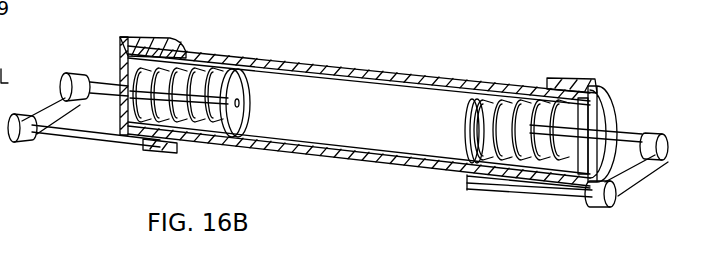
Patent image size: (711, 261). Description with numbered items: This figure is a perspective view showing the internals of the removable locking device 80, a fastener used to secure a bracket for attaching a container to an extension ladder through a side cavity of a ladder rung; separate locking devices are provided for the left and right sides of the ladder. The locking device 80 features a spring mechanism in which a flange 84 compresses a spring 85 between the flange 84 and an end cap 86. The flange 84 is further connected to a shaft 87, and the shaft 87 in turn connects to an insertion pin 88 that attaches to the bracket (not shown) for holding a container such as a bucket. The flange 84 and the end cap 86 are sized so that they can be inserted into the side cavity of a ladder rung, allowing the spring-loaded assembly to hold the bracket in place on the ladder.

The removable locking device 80 is at (72, 175).
The flange 84 is at (467, 140).
The spring 85 is at (221, 82).
The end cap 86 is at (598, 118).
The shaft 87 is at (47, 108).
The insertion pin 88 is at (467, 183).